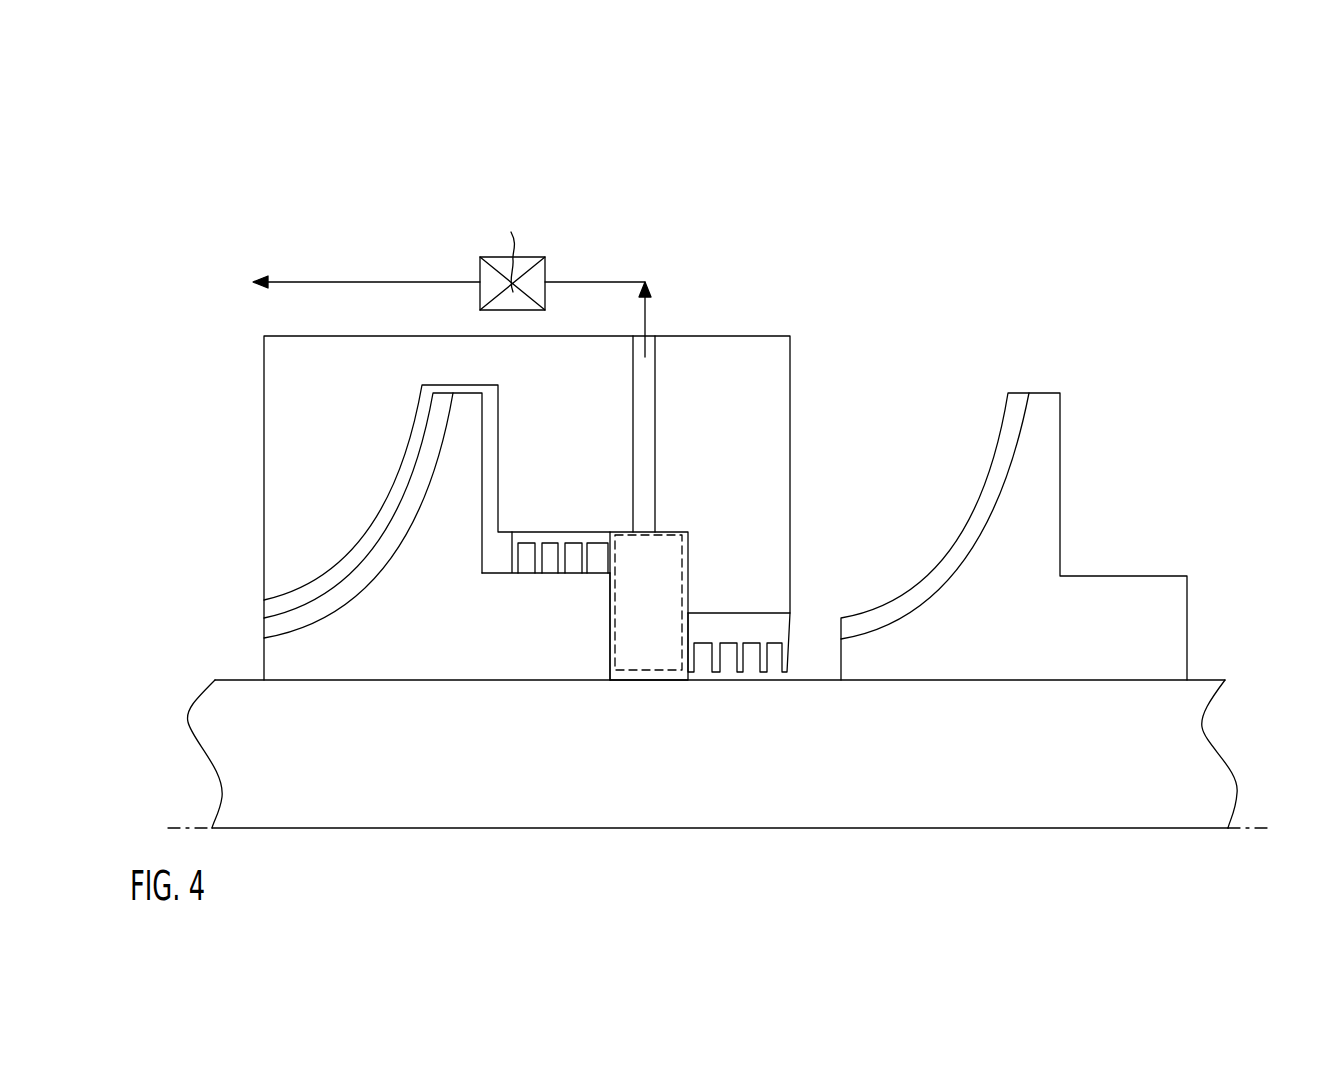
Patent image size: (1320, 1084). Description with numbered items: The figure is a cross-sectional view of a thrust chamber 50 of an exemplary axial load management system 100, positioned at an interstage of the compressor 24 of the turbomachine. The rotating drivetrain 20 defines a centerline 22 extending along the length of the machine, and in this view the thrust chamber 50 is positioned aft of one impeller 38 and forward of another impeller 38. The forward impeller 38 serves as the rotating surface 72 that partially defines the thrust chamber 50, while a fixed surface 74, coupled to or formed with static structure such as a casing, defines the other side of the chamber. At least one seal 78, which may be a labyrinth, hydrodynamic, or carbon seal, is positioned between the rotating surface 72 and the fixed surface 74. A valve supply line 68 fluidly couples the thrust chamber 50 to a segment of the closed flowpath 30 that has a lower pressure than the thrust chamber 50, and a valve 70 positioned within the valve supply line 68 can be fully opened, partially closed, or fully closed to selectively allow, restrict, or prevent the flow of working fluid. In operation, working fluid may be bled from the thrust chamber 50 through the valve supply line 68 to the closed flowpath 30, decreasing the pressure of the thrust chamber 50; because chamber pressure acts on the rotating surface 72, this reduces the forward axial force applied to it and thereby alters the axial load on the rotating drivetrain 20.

The axial load management system 100 is at (322, 165).
The rotating drivetrain 20 is at (630, 830).
The centerline 22 is at (1258, 830).
The compressor 24 is at (805, 205).
The closed flowpath 30 is at (320, 597).
The impeller 38 is at (453, 650).
The thrust chamber 50 is at (637, 697).
The valve supply line 68 is at (363, 280).
The valve 70 is at (537, 257).
The rotating surface 72 is at (600, 635).
The fixed surface 74 is at (737, 490).
The seal 78 is at (582, 537).